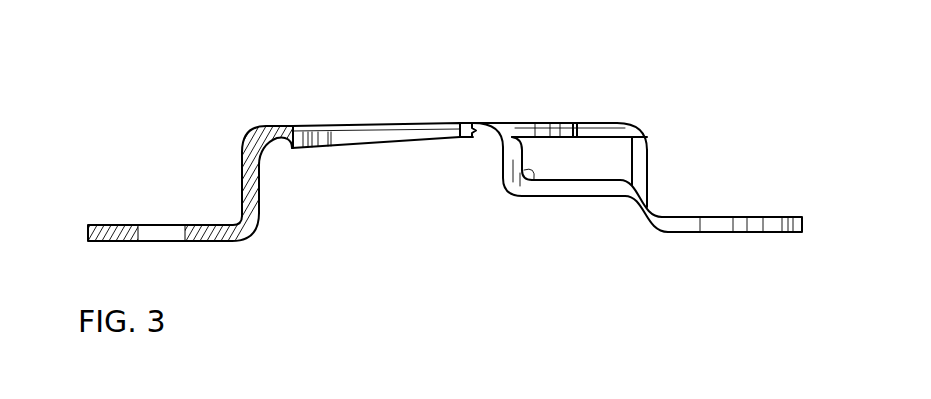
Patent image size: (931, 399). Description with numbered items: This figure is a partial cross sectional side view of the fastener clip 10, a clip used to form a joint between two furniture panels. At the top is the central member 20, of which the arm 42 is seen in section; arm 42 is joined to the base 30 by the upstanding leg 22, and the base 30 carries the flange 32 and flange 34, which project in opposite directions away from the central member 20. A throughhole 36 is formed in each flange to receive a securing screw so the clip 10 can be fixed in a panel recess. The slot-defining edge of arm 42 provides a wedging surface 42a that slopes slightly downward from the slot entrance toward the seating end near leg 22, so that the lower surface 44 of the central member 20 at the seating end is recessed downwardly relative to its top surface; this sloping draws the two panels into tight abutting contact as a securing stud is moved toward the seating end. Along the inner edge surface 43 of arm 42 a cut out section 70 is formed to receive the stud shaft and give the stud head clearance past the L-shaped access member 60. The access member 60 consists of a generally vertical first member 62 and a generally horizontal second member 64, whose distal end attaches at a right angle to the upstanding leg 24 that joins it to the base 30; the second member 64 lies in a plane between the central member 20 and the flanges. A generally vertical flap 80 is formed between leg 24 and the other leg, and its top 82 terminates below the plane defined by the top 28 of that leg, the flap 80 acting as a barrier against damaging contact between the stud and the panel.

The fastener clip 10 is at (312, 297).
The central member 20 is at (305, 125).
The upstanding leg 22 is at (247, 172).
The upstanding leg 24 is at (641, 208).
The top of leg 27 28 is at (636, 128).
The base 30 is at (735, 262).
The flange 32 is at (110, 222).
The flange 34 is at (790, 215).
The throughhole 36 is at (160, 235).
The arm 42 is at (332, 124).
The wedging surface 42a is at (380, 148).
The inner edge surface 43 is at (612, 123).
The lower surface 44 is at (313, 152).
The access member 60 is at (532, 183).
The first member 62 is at (506, 152).
The second member 64 is at (556, 184).
The cut out section 70 is at (555, 122).
The flap 80 is at (642, 168).
The top of flap 82 is at (647, 137).